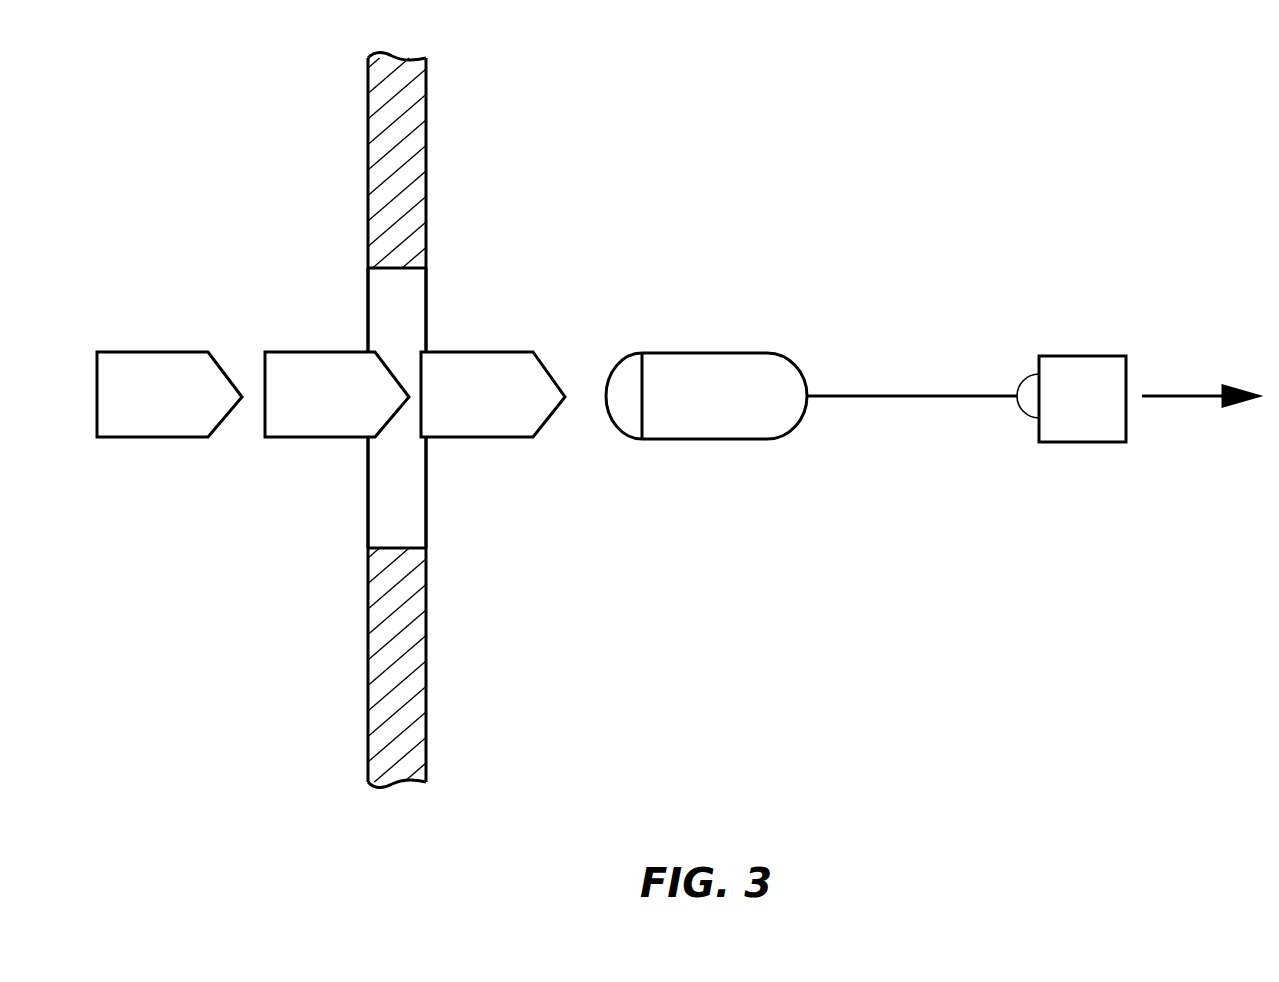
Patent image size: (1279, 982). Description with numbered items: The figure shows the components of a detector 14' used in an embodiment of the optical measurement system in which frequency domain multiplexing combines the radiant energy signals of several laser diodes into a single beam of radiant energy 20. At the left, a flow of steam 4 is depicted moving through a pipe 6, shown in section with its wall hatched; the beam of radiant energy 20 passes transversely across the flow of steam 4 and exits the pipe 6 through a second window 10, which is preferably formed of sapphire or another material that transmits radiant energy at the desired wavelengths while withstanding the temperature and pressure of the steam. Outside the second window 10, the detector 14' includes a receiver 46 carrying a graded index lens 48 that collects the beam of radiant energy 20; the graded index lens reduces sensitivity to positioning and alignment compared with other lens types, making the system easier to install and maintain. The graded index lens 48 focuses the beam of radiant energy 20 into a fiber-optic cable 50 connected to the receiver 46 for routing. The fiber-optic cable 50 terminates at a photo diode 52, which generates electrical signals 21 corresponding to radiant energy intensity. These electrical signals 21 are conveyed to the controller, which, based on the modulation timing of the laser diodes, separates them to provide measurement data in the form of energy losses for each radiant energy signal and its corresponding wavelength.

The flow of steam 4 is at (212, 231).
The pipe 6 is at (427, 626).
The second window 10 is at (427, 317).
The beam of radiant energy 20 is at (495, 438).
The detector 14' is at (1100, 79).
The receiver 46 is at (693, 440).
The graded index lens 48 is at (622, 360).
The fiber-optic cable 50 is at (868, 397).
The photo diode 52 is at (1092, 443).
The electrical signals 21 is at (1191, 395).